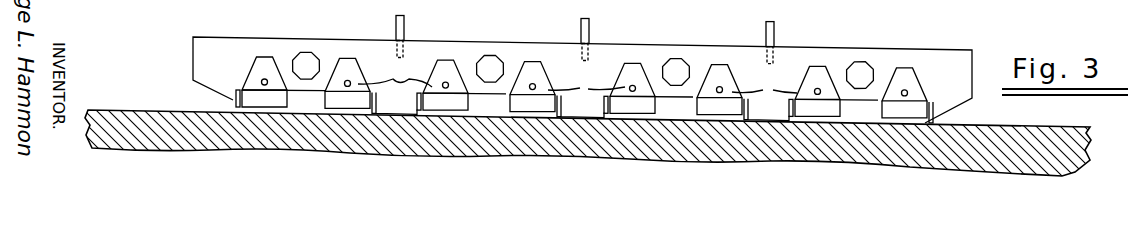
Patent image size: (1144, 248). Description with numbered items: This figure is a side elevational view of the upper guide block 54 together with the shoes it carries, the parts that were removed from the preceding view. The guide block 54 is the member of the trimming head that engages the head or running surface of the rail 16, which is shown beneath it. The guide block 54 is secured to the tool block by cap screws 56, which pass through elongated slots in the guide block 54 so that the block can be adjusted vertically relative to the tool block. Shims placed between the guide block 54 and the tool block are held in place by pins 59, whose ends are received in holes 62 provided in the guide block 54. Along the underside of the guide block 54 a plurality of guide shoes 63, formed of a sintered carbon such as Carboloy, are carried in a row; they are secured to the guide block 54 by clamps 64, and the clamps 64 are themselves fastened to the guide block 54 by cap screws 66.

The rail 16 is at (145, 113).
The guide block 54 is at (967, 62).
The cap screws 56 is at (306, 51).
The pins 59 is at (396, 26).
The holes 62 is at (405, 34).
The guide shoes 63 is at (298, 109).
The clamps 64 is at (672, 82).
The cap screws 66 is at (395, 72).